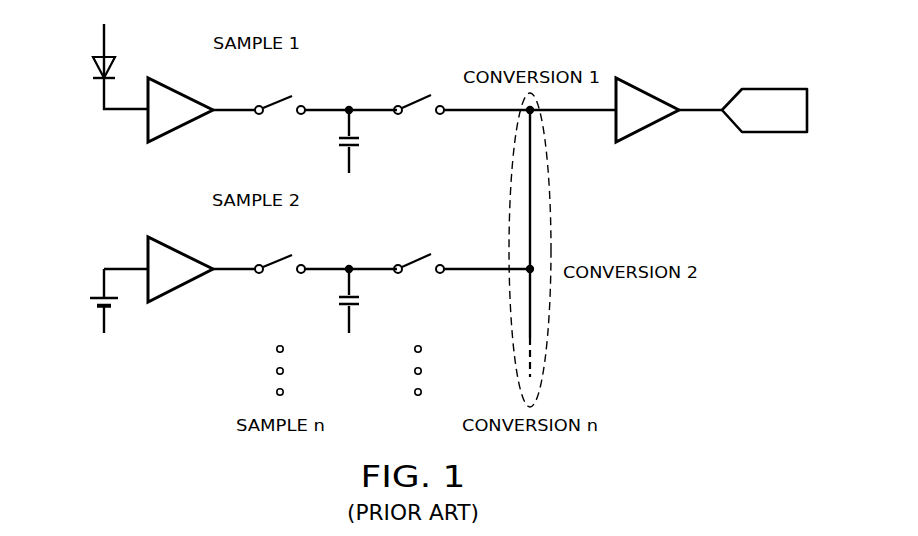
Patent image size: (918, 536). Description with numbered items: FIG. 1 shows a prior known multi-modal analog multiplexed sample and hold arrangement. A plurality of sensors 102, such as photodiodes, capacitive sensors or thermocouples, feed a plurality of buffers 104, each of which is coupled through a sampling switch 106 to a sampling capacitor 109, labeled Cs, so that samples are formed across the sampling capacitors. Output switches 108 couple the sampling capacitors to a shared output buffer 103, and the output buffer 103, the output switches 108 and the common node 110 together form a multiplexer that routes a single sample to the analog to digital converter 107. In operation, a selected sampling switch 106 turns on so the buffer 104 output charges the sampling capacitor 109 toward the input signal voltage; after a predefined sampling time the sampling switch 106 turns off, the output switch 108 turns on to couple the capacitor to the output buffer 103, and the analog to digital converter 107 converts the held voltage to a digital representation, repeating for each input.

The sensors 102 is at (95, 68).
The shared output buffer 103 is at (650, 91).
The buffer 104 is at (180, 130).
The sampling switch 106 is at (280, 97).
The analog to digital converter 107 is at (768, 88).
The output switch 108 is at (420, 97).
The sampling capacitor 109 is at (338, 301).
The node 110 is at (551, 323).